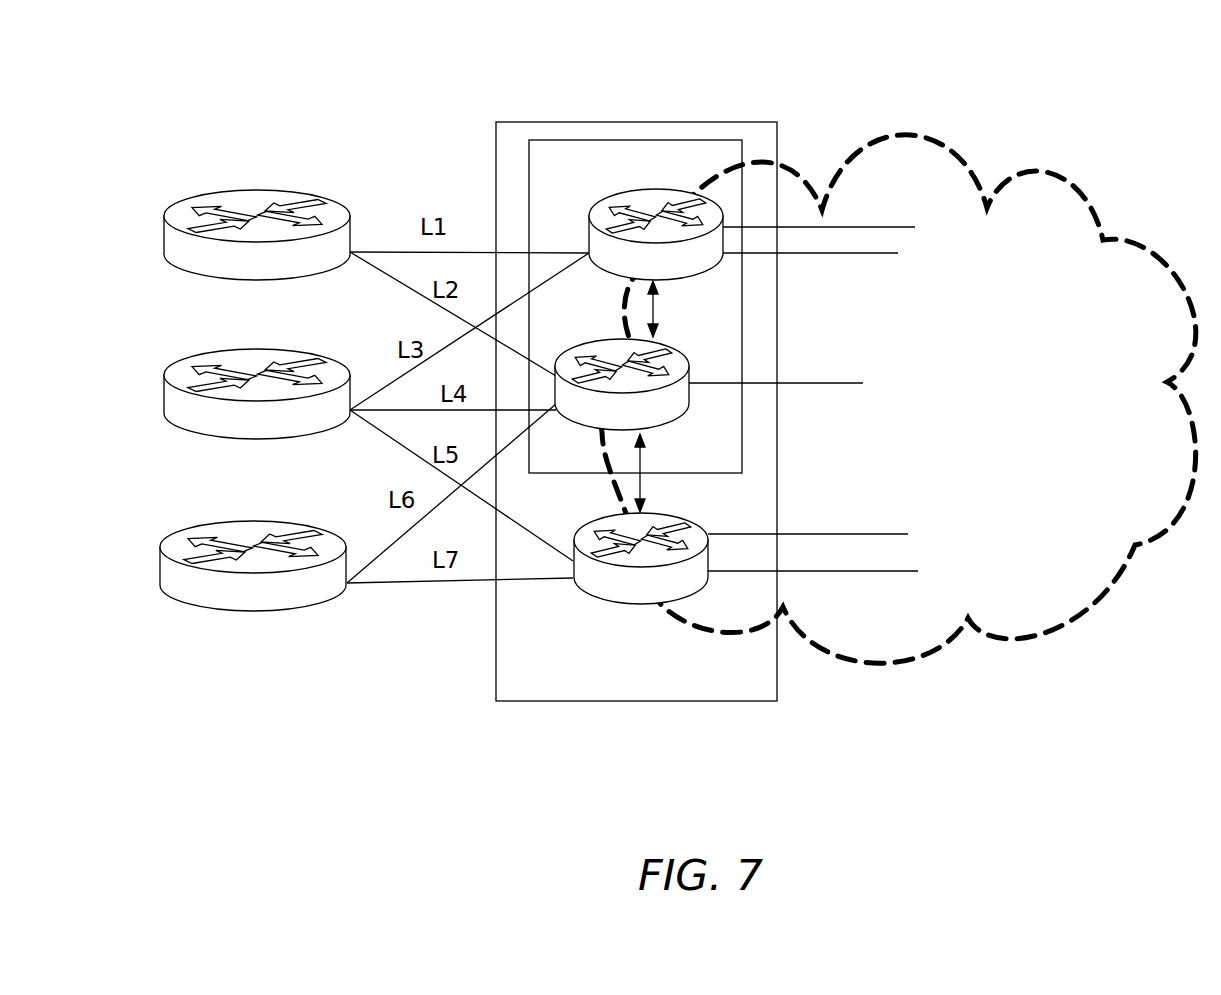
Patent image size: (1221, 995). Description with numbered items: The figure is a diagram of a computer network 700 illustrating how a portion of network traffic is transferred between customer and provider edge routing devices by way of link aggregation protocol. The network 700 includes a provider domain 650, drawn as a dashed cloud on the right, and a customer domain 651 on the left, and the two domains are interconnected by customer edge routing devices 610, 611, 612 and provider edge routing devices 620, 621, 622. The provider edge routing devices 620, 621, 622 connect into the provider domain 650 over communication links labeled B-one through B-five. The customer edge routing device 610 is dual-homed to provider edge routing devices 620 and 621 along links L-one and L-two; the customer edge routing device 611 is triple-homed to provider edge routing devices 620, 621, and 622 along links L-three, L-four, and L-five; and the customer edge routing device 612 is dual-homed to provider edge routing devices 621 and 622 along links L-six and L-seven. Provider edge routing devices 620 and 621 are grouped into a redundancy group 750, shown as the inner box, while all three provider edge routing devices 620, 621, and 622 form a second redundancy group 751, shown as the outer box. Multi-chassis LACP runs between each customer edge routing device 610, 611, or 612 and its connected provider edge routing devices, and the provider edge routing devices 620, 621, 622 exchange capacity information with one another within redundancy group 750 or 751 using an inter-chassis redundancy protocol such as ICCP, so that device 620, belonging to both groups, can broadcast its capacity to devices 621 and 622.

The computer network 700 is at (988, 67).
The customer edge routing device 610 is at (257, 235).
The customer edge routing device 611 is at (257, 394).
The customer edge routing device 612 is at (253, 566).
The provider edge routing device 620 is at (656, 234).
The provider edge routing device 621 is at (622, 384).
The provider edge routing device 622 is at (641, 558).
The provider domain 650 is at (846, 422).
The customer domain 651 is at (277, 371).
The redundancy group 750 is at (635, 284).
The second redundancy group 751 is at (636, 435).